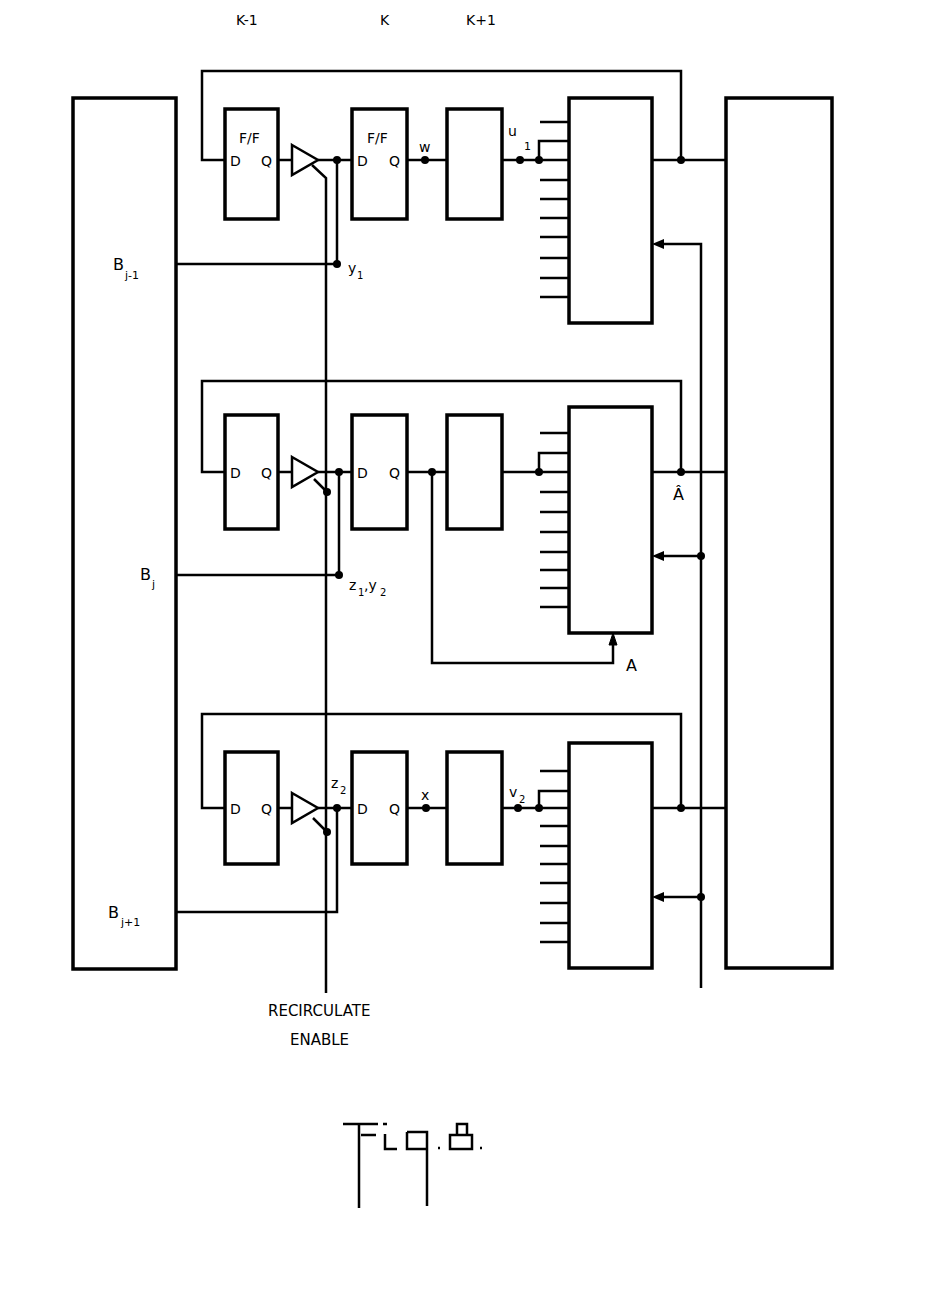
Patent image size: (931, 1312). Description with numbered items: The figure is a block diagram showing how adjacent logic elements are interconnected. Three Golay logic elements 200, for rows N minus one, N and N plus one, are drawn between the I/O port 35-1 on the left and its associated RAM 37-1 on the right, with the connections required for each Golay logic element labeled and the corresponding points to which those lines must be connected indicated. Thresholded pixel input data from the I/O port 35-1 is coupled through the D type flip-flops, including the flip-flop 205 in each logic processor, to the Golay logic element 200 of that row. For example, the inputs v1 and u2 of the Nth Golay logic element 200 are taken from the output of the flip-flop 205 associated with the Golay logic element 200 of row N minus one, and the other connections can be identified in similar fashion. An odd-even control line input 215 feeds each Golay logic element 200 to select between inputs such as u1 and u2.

The I/O port 35-1 is at (104, 97).
The RAM 37-1 is at (787, 97).
The D type flip-flop 205 is at (480, 112).
The Golay logic element 200 is at (648, 228).
The odd-even control line input 215 is at (698, 978).